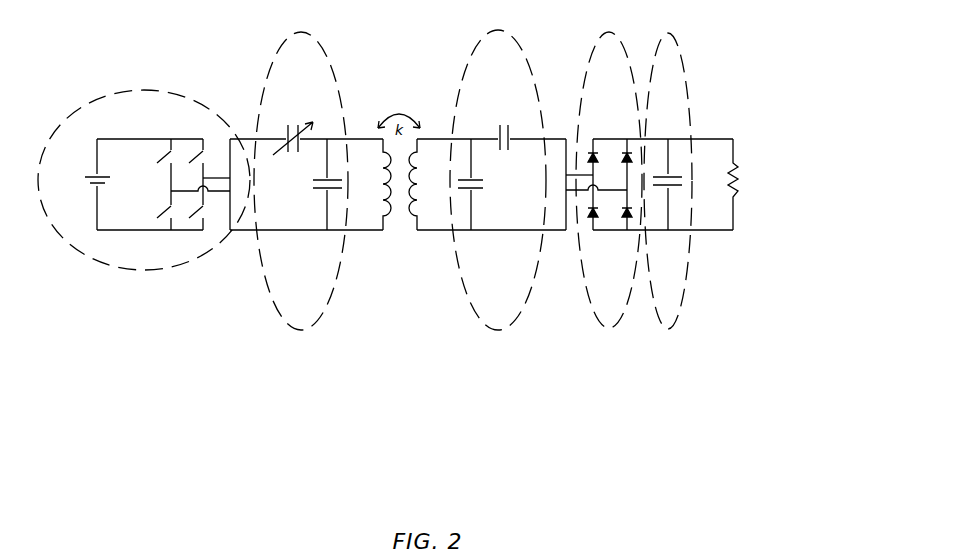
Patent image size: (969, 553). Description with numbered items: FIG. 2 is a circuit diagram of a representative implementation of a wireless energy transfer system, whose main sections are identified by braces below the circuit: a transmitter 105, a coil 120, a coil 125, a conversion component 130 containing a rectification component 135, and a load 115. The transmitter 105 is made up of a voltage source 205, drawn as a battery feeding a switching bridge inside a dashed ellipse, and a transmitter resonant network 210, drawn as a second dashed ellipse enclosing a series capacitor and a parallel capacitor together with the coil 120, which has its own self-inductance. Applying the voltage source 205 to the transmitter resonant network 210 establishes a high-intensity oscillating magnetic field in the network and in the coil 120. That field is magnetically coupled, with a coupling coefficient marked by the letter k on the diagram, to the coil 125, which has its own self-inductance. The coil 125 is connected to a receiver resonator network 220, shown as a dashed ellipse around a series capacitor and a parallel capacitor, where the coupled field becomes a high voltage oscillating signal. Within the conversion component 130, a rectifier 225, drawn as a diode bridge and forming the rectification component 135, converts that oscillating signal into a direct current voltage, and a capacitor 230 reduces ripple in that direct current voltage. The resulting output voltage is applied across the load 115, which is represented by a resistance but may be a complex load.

The transmitter 105 is at (82, 397).
The load 115 is at (708, 397).
The coil 120 is at (349, 397).
The coil 125 is at (402, 397).
The conversion component 130 is at (447, 397).
The rectification component 135 is at (642, 345).
The voltage source 205 is at (165, 92).
The transmitter resonant network 210 is at (326, 58).
The receiver resonator network 220 is at (526, 60).
The rectifier 225 is at (622, 45).
The capacitor 230 is at (679, 48).